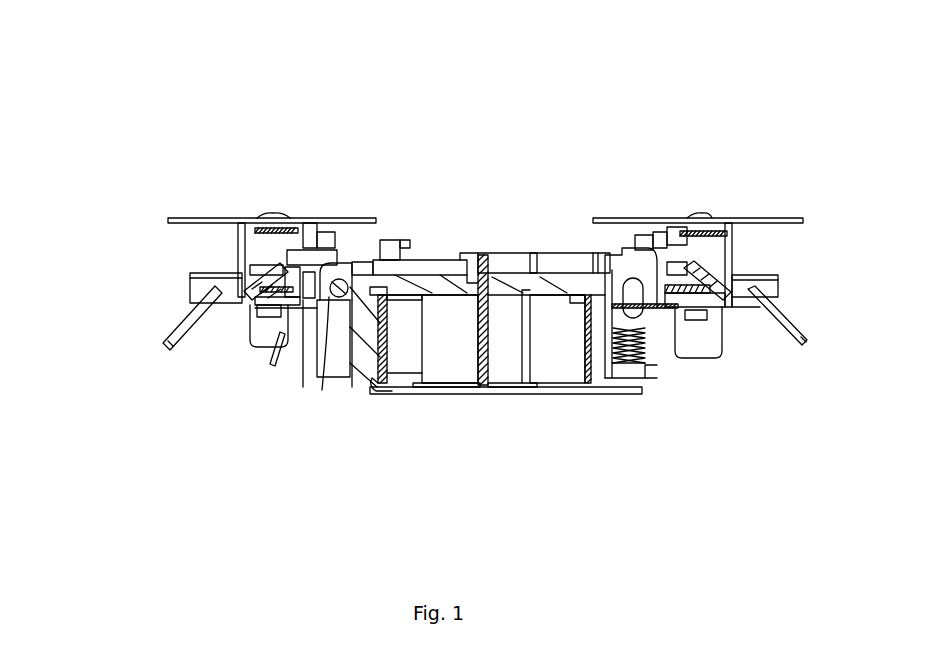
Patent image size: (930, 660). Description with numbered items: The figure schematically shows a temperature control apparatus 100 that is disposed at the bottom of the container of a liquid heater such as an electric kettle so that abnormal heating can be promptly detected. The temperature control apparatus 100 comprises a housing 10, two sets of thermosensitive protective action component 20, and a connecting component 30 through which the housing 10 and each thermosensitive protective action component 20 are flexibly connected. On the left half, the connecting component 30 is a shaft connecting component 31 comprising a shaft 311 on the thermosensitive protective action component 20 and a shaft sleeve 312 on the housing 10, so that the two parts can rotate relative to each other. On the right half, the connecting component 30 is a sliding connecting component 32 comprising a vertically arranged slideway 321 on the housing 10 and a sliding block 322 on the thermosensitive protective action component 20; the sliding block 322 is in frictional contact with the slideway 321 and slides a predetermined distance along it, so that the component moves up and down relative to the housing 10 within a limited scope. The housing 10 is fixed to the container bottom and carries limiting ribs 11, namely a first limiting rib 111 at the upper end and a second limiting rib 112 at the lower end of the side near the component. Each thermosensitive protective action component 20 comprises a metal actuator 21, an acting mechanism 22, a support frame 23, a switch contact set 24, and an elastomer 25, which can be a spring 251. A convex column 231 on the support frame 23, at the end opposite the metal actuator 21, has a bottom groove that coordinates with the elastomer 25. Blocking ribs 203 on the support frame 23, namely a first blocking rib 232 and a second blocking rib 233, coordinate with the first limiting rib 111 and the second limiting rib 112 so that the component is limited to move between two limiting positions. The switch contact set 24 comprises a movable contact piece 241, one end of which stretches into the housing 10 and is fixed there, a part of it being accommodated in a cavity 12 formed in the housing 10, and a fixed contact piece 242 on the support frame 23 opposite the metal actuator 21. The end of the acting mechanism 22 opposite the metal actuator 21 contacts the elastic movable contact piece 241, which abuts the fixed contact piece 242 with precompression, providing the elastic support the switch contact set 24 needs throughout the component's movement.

The temperature control apparatus 100 is at (238, 90).
The housing 10 is at (520, 283).
The limiting ribs 11 is at (323, 382).
The cavity 12 is at (593, 278).
The thermosensitive protective action component 20 is at (188, 283).
The metal actuator 21 is at (338, 217).
The acting mechanism 22 is at (348, 252).
The support frame 23 is at (255, 272).
The switch contact set 24 is at (262, 302).
The elastomer 25 is at (247, 372).
The connecting component 30 is at (398, 275).
The shaft connecting component 31 is at (435, 427).
The sliding connecting component 32 is at (650, 297).
The first limiting rib 111 is at (407, 258).
The second limiting rib 112 is at (322, 392).
The blocking ribs 203 is at (372, 256).
The convex column 231 is at (270, 340).
The first blocking rib 232 is at (408, 250).
The second blocking rib 233 is at (301, 390).
The movable contact piece 241 is at (300, 352).
The fixed contact piece 242 is at (168, 352).
The spring 251 is at (632, 378).
The shaft 311 is at (372, 386).
The shaft sleeve 312 is at (339, 298).
The slideway 321 is at (632, 318).
The sliding block 322 is at (638, 290).